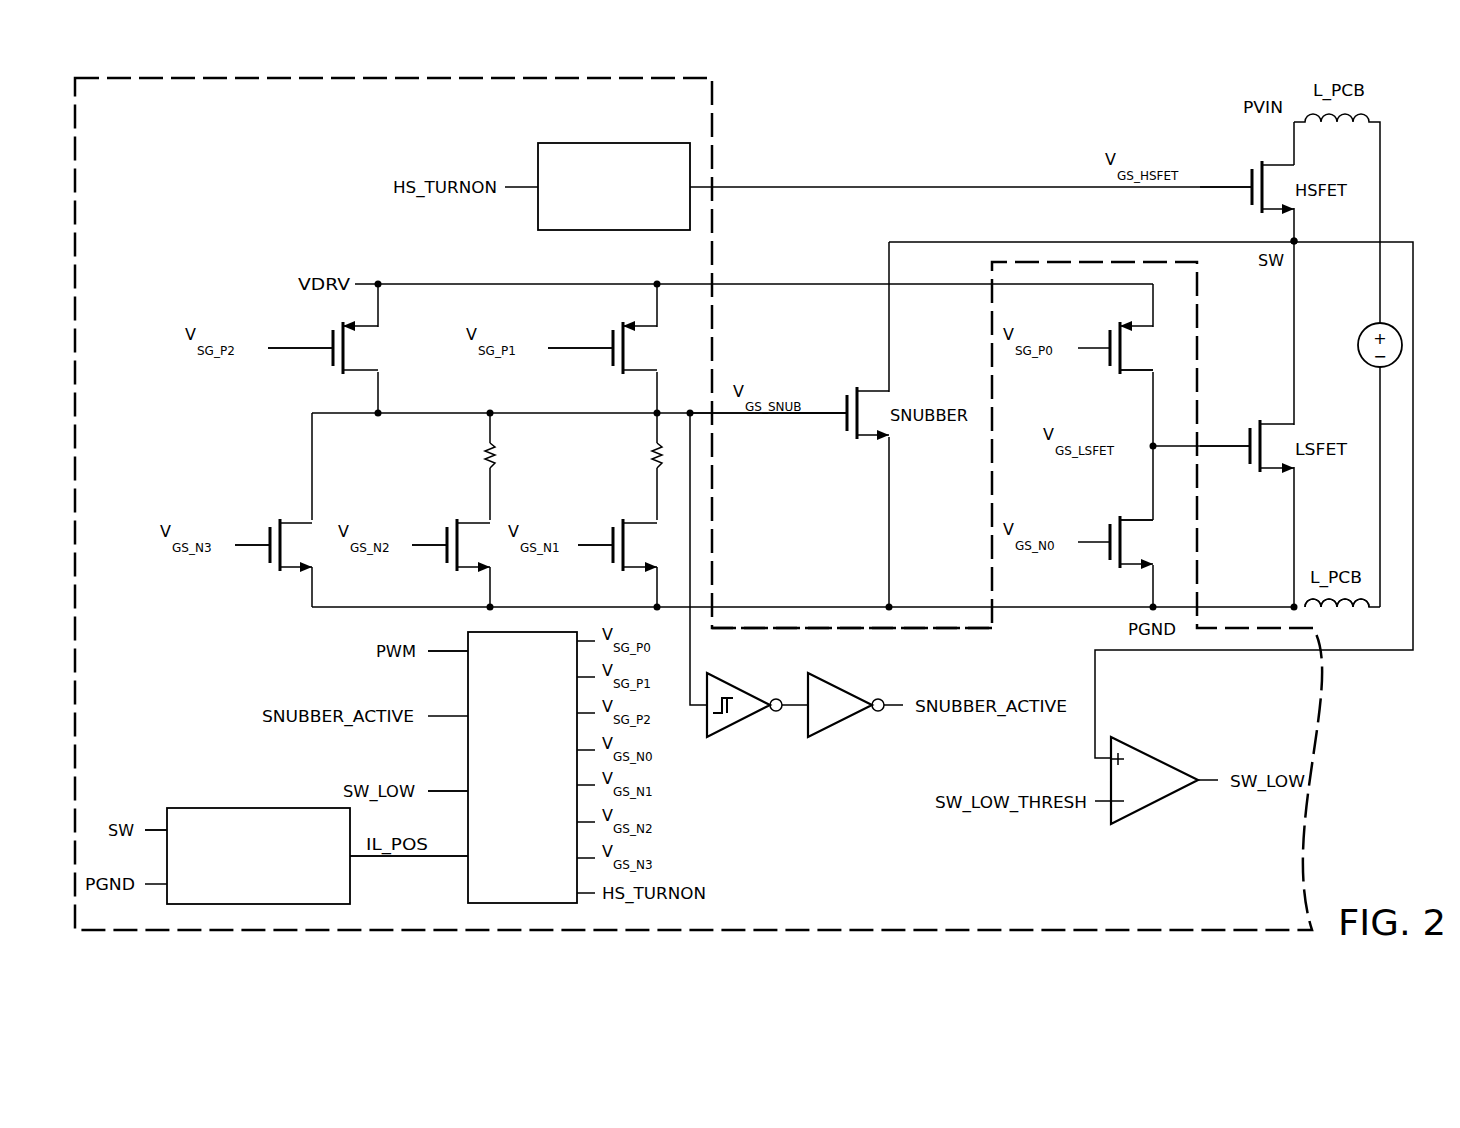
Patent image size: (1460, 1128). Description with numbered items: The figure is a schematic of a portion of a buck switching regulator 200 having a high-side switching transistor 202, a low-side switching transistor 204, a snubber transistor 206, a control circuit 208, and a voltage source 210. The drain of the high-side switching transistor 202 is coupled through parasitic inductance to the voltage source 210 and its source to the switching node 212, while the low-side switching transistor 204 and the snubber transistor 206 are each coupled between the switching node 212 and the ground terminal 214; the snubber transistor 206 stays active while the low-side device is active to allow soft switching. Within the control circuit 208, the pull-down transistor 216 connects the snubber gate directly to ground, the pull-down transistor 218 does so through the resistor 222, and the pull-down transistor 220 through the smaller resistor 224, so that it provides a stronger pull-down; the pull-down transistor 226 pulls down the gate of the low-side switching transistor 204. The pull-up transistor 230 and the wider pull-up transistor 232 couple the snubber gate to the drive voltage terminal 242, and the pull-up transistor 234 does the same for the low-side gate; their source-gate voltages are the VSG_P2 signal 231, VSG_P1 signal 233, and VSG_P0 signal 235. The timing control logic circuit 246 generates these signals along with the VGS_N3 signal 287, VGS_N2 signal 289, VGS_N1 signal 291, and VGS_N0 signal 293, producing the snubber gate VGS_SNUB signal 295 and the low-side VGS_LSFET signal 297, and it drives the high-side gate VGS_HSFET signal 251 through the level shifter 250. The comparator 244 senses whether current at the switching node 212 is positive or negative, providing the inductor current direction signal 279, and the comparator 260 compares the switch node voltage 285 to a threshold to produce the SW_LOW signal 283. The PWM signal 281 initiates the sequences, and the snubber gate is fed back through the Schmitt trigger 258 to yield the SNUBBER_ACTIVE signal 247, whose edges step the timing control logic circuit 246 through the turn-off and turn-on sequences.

The buck switching regulator 200 is at (1038, 128).
The high-side switching transistor 202 is at (1248, 197).
The low-side switching transistor 204 is at (1246, 424).
The snubber transistor 206 is at (845, 394).
The control circuit 208 is at (1345, 776).
The voltage source 210 is at (1368, 364).
The switching node 212 is at (1300, 248).
The ground terminal 214 is at (1292, 604).
The pull-down transistor 216 is at (266, 526).
The pull-down transistor 218 is at (444, 526).
The pull-down transistor 220 is at (610, 526).
The resistor 222 is at (483, 458).
The resistor 224 is at (650, 458).
The pull-down transistor 226 is at (1108, 522).
The pull-up transistor 230 is at (328, 340).
The VSG_P2 signal 231 is at (303, 355).
The pull-up transistor 232 is at (607, 340).
The VSG_P1 signal 233 is at (583, 355).
The pull-up transistor 234 is at (1100, 374).
The VSG_P0 signal 235 is at (1104, 345).
The drive voltage terminal 242 is at (799, 283).
The comparator 244 is at (258, 806).
The timing control logic circuit 246 is at (543, 824).
The SNUBBER_ACTIVE signal 247 is at (898, 709).
The level shifter 250 is at (612, 143).
The VGS_HSFET signal 251 is at (1241, 183).
The Schmitt trigger 258 is at (740, 727).
The comparator 260 is at (1178, 745).
The inductor current direction signal 279 is at (448, 859).
The PWM signal 281 is at (444, 655).
The SW_LOW signal 283 is at (446, 789).
The switch node voltage 285 is at (158, 828).
The VGS_N3 signal 287 is at (258, 550).
The VGS_N2 signal 289 is at (434, 550).
The VGS_N1 signal 291 is at (600, 550).
The VGS_N0 signal 293 is at (1100, 566).
The VGS_SNUB signal 295 is at (843, 418).
The VGS_LSFET signal 297 is at (1246, 453).